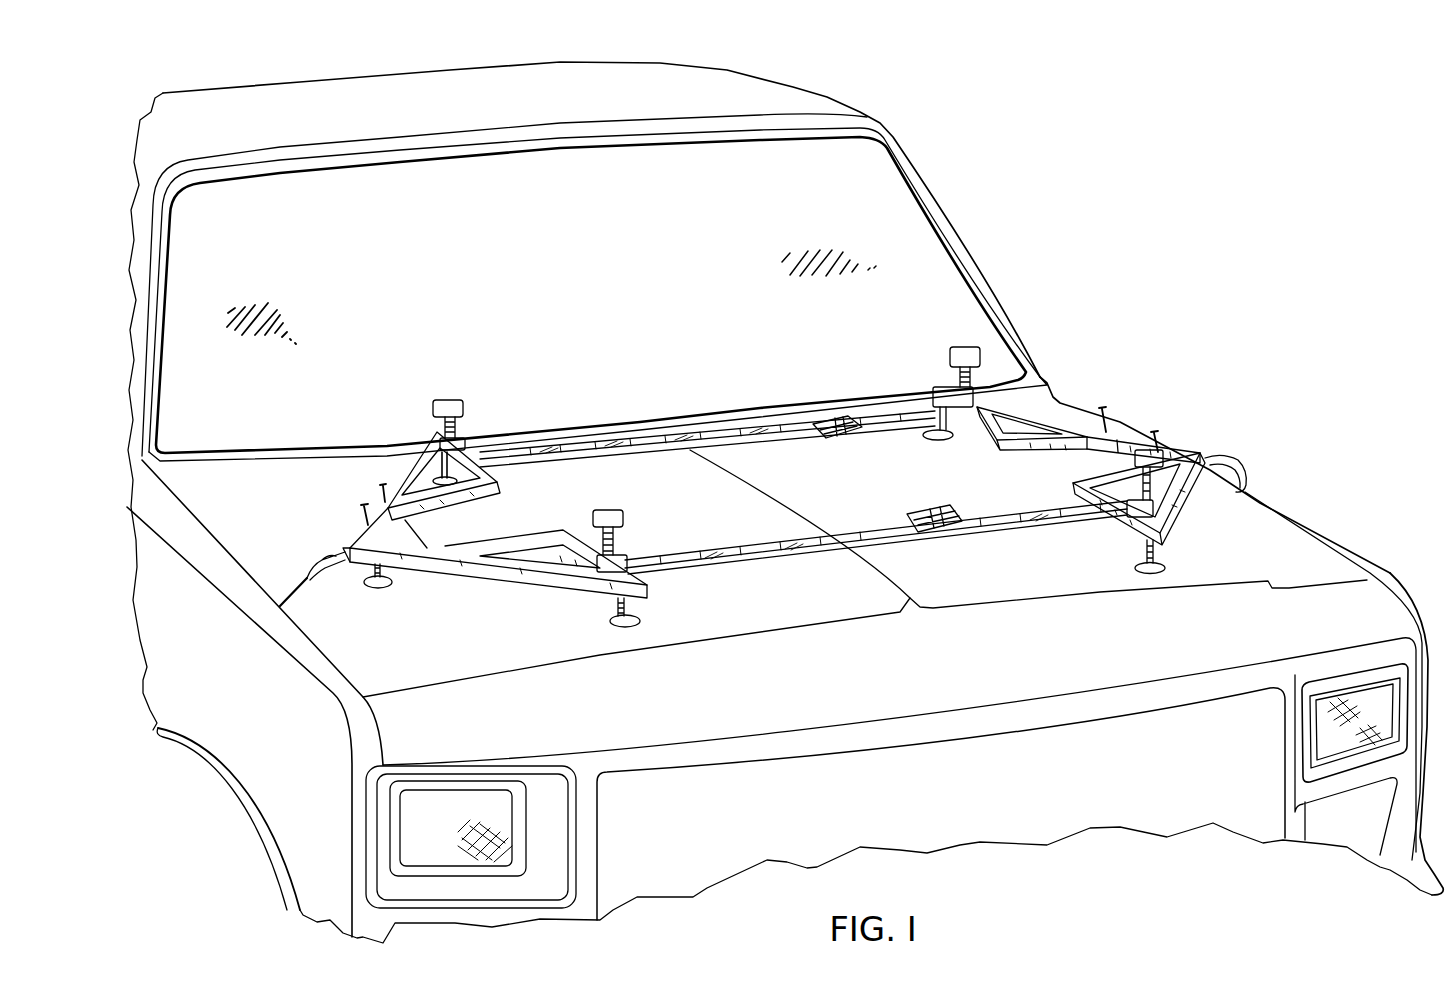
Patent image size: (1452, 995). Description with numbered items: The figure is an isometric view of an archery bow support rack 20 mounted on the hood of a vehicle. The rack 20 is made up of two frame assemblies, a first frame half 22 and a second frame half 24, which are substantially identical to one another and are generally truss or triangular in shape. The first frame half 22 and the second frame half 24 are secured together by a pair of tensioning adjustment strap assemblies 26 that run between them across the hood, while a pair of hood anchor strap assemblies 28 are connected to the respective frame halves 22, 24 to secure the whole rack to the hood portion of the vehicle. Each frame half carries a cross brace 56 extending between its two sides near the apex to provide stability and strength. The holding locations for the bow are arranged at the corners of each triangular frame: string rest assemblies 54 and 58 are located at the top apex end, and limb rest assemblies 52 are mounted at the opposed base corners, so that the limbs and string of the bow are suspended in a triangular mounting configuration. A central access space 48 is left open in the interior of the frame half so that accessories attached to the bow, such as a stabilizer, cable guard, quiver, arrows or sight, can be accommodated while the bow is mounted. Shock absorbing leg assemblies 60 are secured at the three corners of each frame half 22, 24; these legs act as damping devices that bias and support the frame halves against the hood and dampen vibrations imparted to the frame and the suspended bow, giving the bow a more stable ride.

The archery bow support rack 20 is at (1240, 352).
The first frame half 22 is at (389, 465).
The second frame half 24 is at (1293, 517).
The tensioning adjustment strap assemblies 26 is at (892, 505).
The hood anchor strap assemblies 28 is at (291, 560).
The central access space 48 is at (484, 517).
The limb rest assemblies 52 is at (462, 398).
The string rest assembly 54 is at (342, 518).
The cross brace 56 is at (485, 528).
The string rest assembly 58 is at (365, 477).
The shock absorbing leg assemblies 60 is at (373, 604).